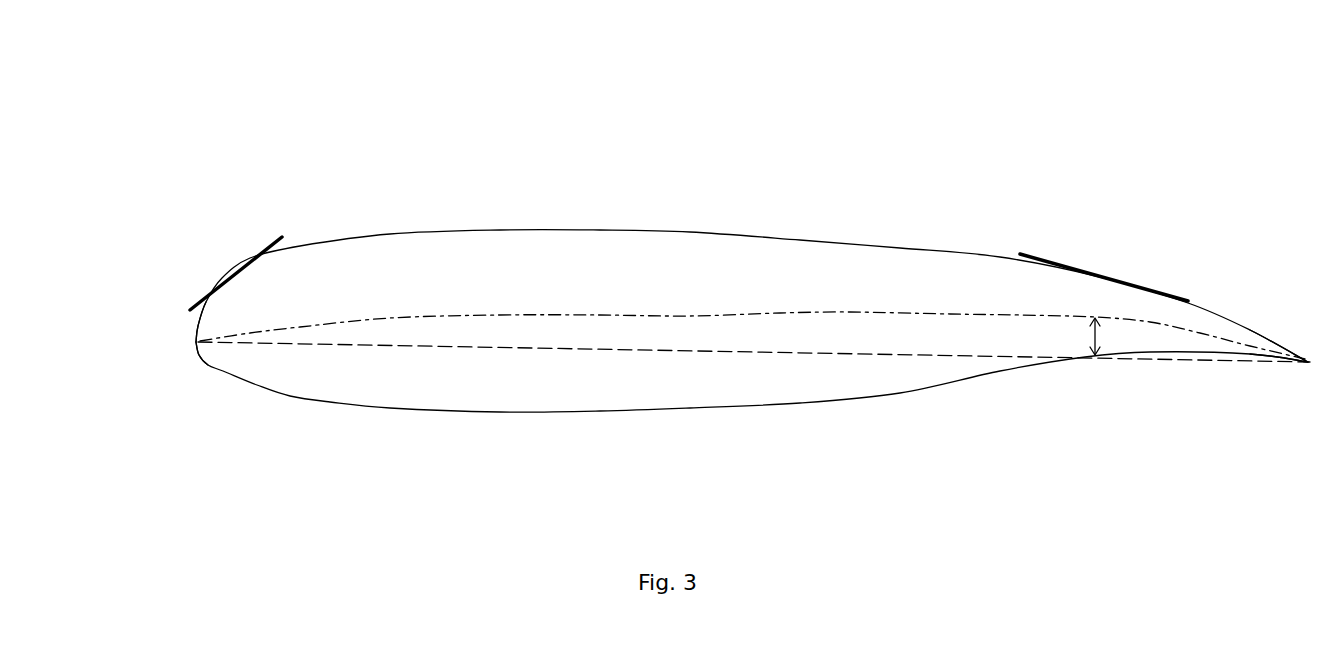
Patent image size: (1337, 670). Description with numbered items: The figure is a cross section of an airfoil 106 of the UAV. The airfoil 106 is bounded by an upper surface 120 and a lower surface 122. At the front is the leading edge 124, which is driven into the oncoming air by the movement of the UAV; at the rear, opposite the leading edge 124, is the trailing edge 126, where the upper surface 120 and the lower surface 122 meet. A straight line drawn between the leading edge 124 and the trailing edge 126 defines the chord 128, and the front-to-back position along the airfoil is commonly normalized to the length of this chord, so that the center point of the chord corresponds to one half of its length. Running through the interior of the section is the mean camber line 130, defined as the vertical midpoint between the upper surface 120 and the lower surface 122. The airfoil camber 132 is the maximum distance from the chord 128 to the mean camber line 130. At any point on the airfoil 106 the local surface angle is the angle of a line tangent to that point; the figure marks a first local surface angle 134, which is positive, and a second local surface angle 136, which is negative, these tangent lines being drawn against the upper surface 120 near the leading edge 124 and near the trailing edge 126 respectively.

The airfoil 106 is at (683, 56).
The upper surface 120 is at (308, 245).
The lower surface 122 is at (310, 398).
The leading edge 124 is at (197, 353).
The trailing edge 126 is at (1310, 362).
The chord 128 is at (861, 353).
The mean camber line 130 is at (953, 315).
The airfoil camber 132 is at (1097, 355).
The first local surface angle 134 is at (207, 292).
The second local surface angle 136 is at (1081, 270).